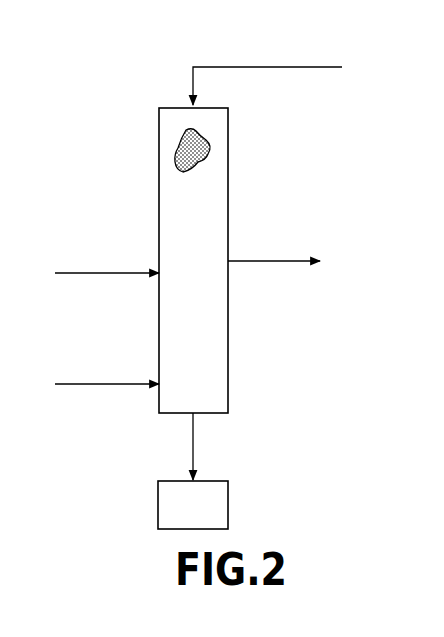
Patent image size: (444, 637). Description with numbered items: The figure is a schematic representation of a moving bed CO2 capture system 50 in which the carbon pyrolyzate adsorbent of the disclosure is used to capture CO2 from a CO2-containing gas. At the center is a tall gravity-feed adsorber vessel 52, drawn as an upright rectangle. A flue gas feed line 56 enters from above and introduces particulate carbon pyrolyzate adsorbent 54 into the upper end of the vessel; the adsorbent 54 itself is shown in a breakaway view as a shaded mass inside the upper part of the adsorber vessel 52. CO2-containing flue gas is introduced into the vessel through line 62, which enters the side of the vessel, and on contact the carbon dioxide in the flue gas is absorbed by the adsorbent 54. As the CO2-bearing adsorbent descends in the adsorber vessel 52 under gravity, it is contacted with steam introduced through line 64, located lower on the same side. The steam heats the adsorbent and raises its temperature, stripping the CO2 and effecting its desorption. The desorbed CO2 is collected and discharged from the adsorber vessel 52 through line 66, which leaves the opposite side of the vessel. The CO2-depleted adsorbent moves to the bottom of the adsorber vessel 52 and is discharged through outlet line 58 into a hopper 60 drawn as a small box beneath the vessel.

The moving bed CO2 capture system 50 is at (343, 165).
The gravity-feed adsorber vessel 52 is at (229, 175).
The carbon pyrolyzate adsorbent 54 is at (176, 158).
The flue gas feed line 56 is at (266, 67).
The outlet line 58 is at (194, 447).
The hopper 60 is at (221, 510).
The line 62 is at (128, 277).
The line 64 is at (128, 388).
The line 66 is at (270, 262).